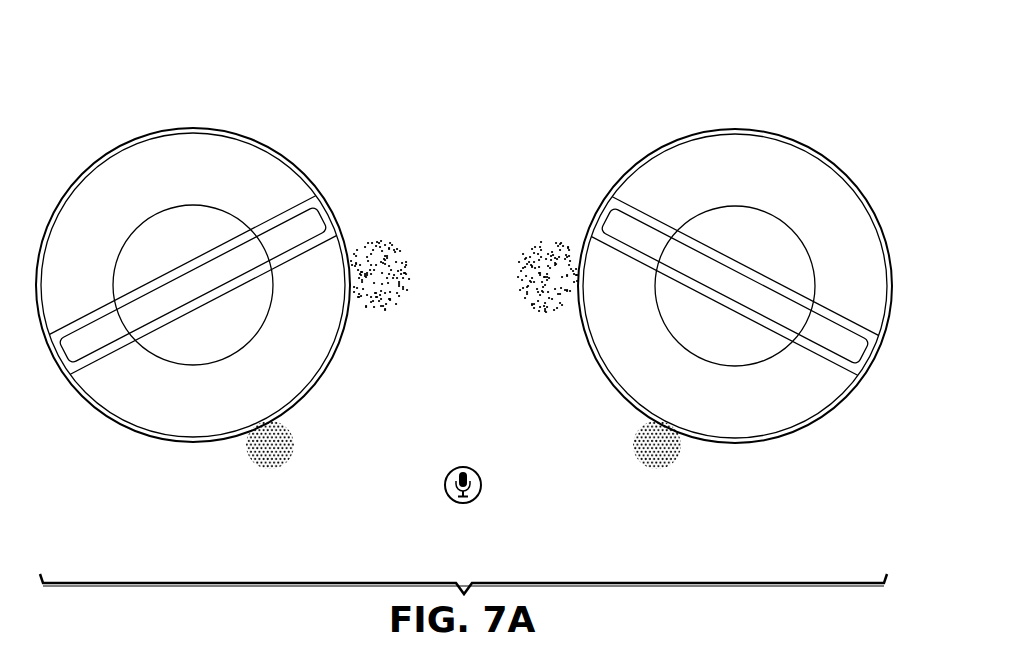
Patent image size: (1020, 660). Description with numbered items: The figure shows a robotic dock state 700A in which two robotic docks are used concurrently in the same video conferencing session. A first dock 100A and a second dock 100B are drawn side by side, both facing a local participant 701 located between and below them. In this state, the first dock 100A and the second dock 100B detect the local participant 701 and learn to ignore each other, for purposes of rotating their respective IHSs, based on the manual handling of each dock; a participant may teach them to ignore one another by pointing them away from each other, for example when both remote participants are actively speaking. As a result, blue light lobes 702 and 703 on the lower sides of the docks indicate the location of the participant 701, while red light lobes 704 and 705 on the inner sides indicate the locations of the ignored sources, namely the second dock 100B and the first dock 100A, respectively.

The robotic dock state 700A is at (176, 58).
The first dock 100A is at (109, 150).
The second dock 100B is at (840, 131).
The local participant 701 is at (467, 503).
The blue light lobe 702 is at (267, 474).
The blue light lobe 703 is at (659, 474).
The red light lobe 704 is at (389, 235).
The red light lobe 705 is at (541, 235).